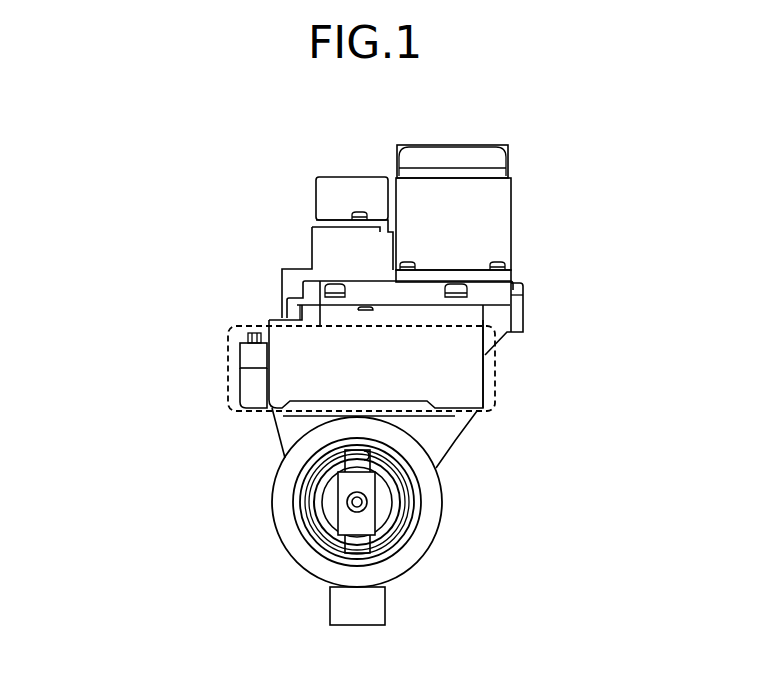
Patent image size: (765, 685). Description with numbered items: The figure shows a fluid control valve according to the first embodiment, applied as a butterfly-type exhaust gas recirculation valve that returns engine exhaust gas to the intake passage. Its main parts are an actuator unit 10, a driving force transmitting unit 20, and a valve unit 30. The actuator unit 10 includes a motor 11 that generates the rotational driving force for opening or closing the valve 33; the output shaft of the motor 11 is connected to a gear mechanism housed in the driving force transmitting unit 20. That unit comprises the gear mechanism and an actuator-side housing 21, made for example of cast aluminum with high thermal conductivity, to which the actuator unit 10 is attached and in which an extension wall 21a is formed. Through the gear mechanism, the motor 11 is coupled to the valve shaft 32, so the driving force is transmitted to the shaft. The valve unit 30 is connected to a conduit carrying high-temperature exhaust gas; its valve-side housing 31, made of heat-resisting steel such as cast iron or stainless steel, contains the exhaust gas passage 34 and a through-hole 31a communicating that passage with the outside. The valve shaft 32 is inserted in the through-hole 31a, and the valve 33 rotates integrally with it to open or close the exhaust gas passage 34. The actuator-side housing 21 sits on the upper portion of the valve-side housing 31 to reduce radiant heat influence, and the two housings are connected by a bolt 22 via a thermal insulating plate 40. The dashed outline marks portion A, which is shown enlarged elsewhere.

The actuator unit 10 is at (522, 147).
The motor 11 is at (470, 195).
The driving force transmitting unit 20 is at (177, 148).
The actuator-side housing 21 is at (408, 352).
The extension wall 21a is at (470, 372).
The bolt 22 is at (265, 337).
The valve unit 30 is at (177, 383).
The valve-side housing 31 is at (288, 432).
The through-hole 31a is at (367, 457).
The valve shaft 32 is at (373, 552).
The valve 33 is at (385, 500).
The exhaust gas passage 34 is at (298, 513).
The thermal insulating plate 40 is at (247, 376).
The portion A is at (495, 400).